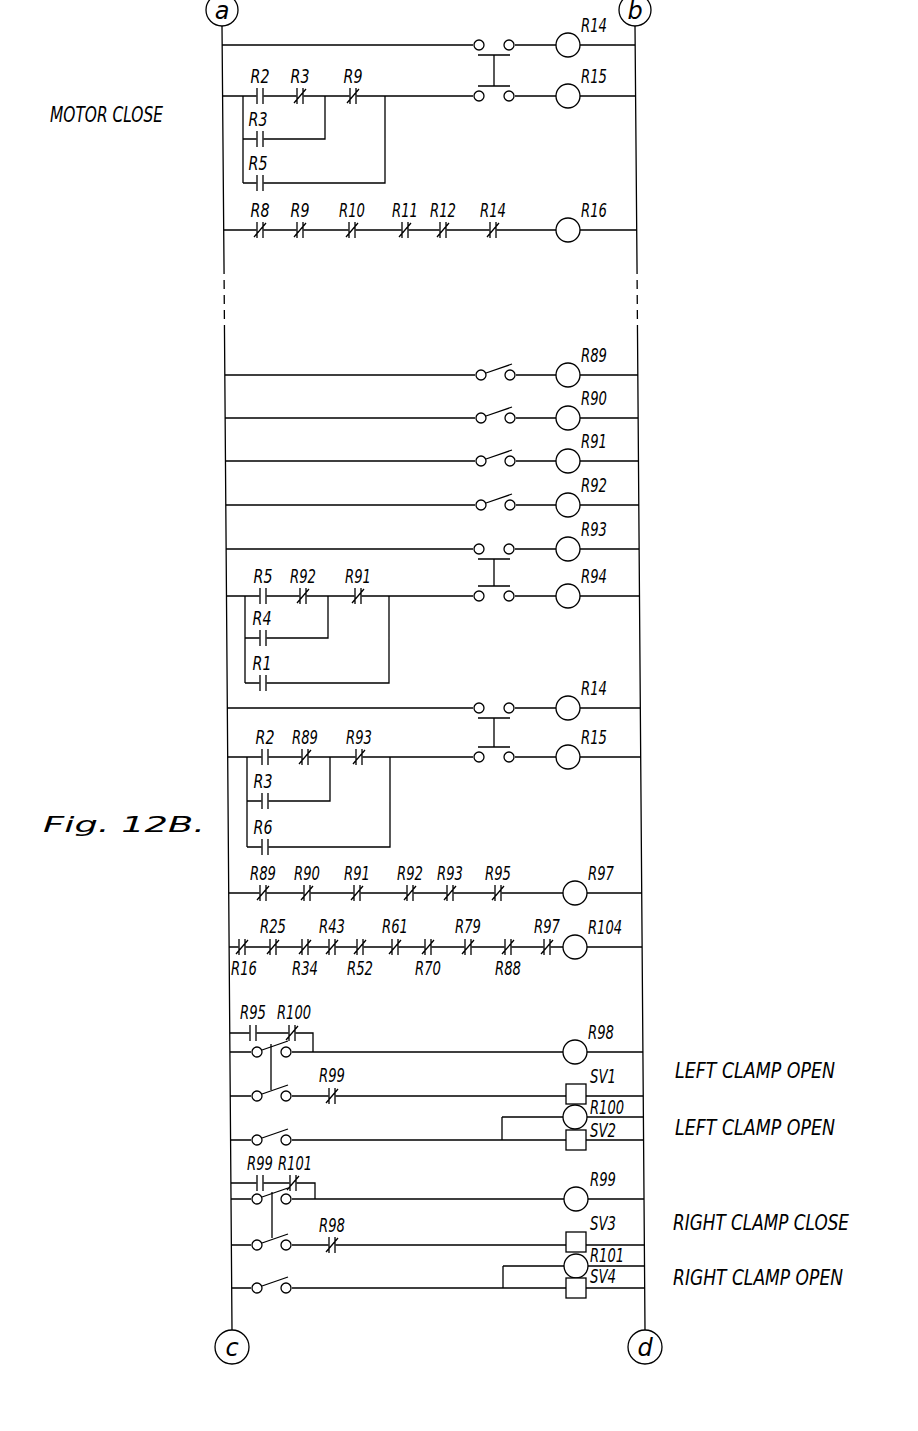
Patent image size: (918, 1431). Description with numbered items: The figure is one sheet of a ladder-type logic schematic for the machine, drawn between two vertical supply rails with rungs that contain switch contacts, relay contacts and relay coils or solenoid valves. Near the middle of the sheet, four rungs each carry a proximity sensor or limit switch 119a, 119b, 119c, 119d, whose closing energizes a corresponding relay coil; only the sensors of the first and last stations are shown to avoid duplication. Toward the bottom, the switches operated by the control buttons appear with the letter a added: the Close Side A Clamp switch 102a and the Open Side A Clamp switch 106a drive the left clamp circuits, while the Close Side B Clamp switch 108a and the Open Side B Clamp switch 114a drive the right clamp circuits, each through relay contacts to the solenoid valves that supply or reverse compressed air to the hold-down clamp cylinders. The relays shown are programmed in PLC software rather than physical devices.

The proximity sensor or limit switch 119a is at (500, 366).
The proximity sensor or limit switch 119b is at (500, 409).
The proximity sensor or limit switch 119c is at (500, 452).
The proximity sensor or limit switch 119d is at (500, 496).
The switch of the Close Side A Clamp button 102a is at (270, 1073).
The switch of the Open Side A Clamp button 106a is at (276, 1136).
The switch of the Close Side B Clamp button 108a is at (270, 1220).
The switch of the Open Side B Clamp button 114a is at (275, 1292).